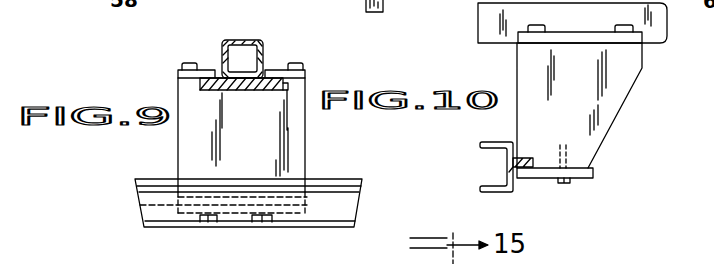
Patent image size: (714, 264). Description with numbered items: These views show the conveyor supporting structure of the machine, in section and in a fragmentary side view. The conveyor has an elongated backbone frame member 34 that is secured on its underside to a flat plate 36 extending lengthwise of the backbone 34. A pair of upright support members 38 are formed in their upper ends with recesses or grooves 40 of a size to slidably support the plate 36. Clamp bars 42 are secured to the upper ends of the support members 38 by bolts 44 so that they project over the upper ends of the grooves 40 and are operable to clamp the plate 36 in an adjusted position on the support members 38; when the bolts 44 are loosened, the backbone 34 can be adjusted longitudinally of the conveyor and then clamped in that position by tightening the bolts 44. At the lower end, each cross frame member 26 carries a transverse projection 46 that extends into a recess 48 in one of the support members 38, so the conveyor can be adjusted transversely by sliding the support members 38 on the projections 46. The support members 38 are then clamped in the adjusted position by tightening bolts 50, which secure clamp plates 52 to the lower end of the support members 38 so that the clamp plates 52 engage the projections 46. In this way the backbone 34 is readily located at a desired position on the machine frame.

In FIG. 9, the cross frame member 26 is at (345, 206).
In FIG. 10, the cross frame member 26 is at (497, 147).
In FIG. 9, the backbone frame member 34 is at (263, 54).
In FIG. 10, the backbone frame member 34 is at (658, 23).
In FIG. 9, the flat plate 36 is at (248, 90).
In FIG. 9, the upright support member 38 is at (293, 142).
In FIG. 10, the upright support member 38 is at (617, 92).
In FIG. 9, the recess or groove 40 is at (288, 88).
In FIG. 9, the clamp bar 42 is at (178, 76).
In FIG. 10, the clamp bar 42 is at (520, 34).
In FIG. 9, the bolt 44 is at (188, 63).
In FIG. 10, the bolt 44 is at (538, 27).
In FIG. 10, the transverse projection 46 is at (523, 158).
In FIG. 10, the recess 48 is at (533, 164).
In FIG. 9, the bolt 50 is at (200, 224).
In FIG. 10, the bolt 50 is at (572, 183).
In FIG. 9, the clamp plate 52 is at (302, 209).
In FIG. 10, the clamp plate 52 is at (583, 168).